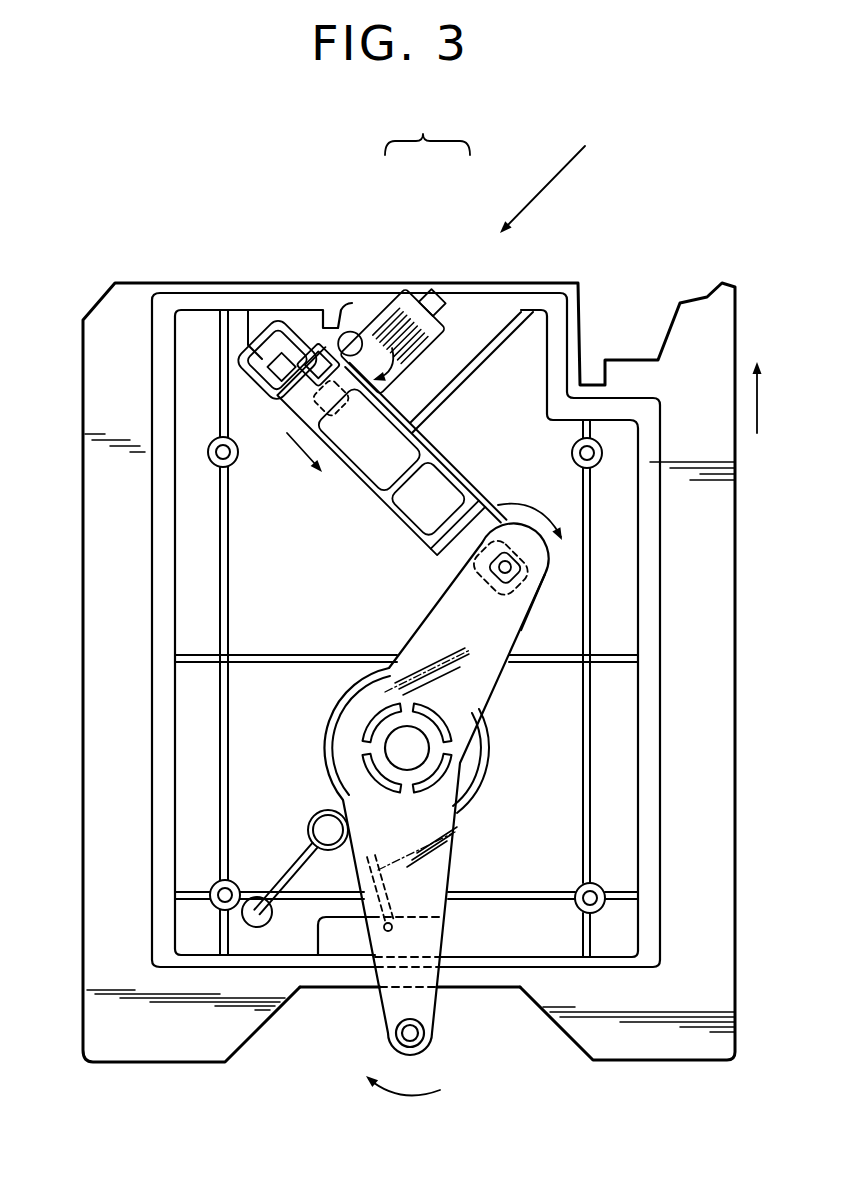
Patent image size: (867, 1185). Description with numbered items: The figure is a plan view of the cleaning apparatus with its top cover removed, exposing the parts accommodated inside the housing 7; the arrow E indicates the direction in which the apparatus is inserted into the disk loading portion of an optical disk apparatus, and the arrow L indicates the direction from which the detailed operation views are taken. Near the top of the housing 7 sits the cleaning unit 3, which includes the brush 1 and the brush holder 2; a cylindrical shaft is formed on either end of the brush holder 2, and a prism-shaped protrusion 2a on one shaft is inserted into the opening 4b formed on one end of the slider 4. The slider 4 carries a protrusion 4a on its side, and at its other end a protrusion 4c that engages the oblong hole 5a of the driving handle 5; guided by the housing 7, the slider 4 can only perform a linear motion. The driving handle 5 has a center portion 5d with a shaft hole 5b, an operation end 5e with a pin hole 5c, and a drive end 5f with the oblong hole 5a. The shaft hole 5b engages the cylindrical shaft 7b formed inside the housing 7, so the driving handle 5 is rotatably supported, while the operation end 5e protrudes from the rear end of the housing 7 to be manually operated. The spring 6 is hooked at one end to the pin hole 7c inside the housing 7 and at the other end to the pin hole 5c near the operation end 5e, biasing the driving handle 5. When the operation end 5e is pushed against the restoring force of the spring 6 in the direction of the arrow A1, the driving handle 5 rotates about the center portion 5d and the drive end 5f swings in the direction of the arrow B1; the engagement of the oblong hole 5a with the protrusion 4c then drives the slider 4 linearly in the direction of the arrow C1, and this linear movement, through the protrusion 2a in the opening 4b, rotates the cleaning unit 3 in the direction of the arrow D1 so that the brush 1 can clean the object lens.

The brush 1 is at (470, 303).
The brush holder 2 is at (386, 300).
The prism-shaped protrusion 2a is at (276, 395).
The cleaning unit 3 is at (427, 129).
The slider 4 is at (360, 495).
The protrusion 4a is at (347, 337).
The opening 4b is at (318, 387).
The protrusion 4c is at (490, 566).
The driving handle 5 is at (472, 697).
The oblong hole 5a is at (517, 598).
The shaft hole 5b is at (425, 768).
The pin hole 5c is at (386, 923).
The center portion 5d is at (362, 705).
The operation end 5e is at (441, 1041).
The drive end 5f is at (552, 580).
The spring 6 is at (297, 860).
The housing 7 is at (186, 1045).
The cylindrical shaft 7b is at (400, 747).
The pin hole 7c is at (262, 927).
The arrow L is at (550, 187).
The arrow E is at (757, 420).
The arrow A1 is at (403, 1105).
The arrow B1 is at (530, 508).
The arrow C1 is at (298, 458).
The arrow D1 is at (393, 374).